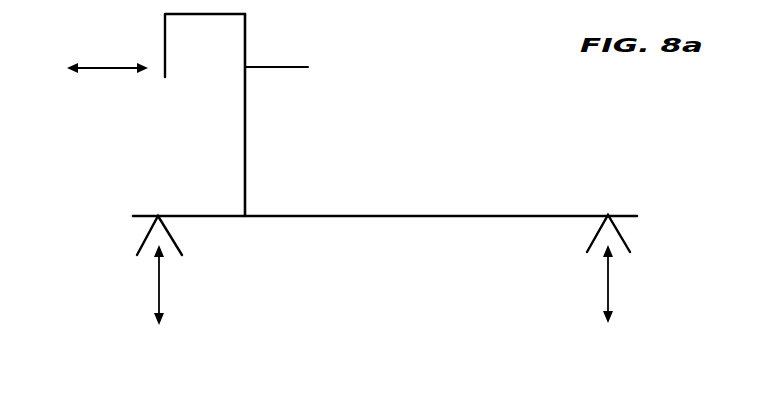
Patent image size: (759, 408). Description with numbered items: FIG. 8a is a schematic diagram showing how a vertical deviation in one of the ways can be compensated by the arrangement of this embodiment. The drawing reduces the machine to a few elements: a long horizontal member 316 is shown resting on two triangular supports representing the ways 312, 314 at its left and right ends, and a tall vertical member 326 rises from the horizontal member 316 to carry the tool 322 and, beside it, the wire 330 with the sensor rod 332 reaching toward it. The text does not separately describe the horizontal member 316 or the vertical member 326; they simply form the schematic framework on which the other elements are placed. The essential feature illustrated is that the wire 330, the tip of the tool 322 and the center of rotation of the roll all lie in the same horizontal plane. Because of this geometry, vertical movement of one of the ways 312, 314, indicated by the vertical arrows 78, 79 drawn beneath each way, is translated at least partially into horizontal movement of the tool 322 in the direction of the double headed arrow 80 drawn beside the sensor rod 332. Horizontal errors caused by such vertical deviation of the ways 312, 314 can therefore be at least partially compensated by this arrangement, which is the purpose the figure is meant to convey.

The beam / bar 316 is at (408, 215).
The vertical member 326 is at (249, 153).
The tool 322 is at (288, 64).
The wire 330 is at (158, 63).
The sensor rod 332 is at (167, 65).
The double headed arrow 80 is at (104, 74).
The way 312 is at (146, 233).
The way 314 is at (623, 228).
The arrow 78 is at (160, 285).
The arrow 79 is at (610, 285).